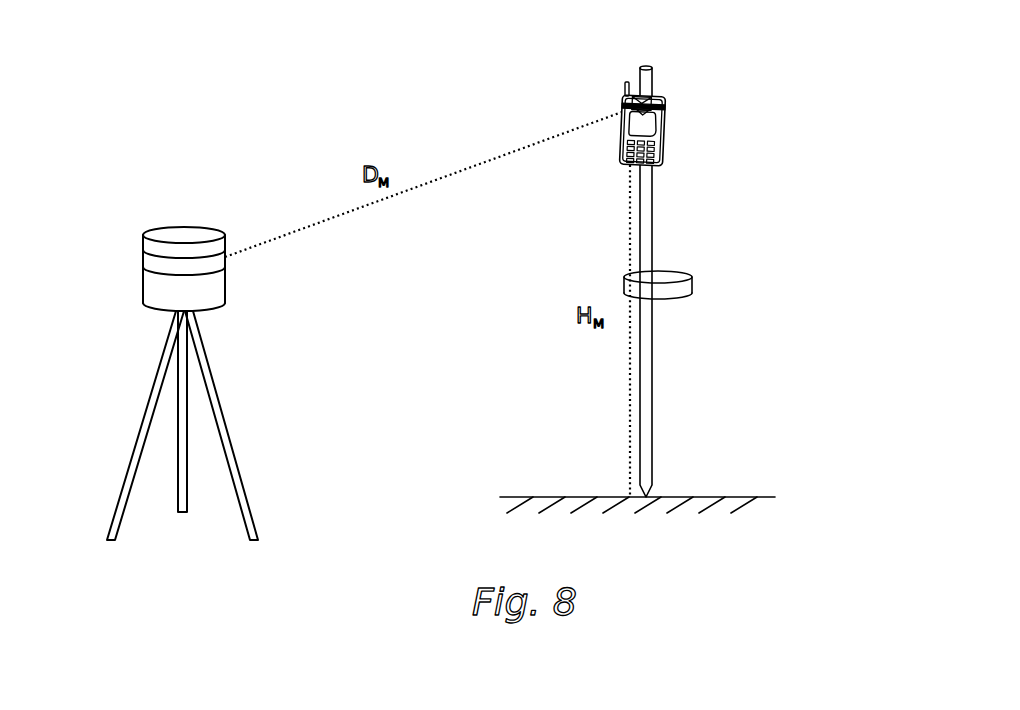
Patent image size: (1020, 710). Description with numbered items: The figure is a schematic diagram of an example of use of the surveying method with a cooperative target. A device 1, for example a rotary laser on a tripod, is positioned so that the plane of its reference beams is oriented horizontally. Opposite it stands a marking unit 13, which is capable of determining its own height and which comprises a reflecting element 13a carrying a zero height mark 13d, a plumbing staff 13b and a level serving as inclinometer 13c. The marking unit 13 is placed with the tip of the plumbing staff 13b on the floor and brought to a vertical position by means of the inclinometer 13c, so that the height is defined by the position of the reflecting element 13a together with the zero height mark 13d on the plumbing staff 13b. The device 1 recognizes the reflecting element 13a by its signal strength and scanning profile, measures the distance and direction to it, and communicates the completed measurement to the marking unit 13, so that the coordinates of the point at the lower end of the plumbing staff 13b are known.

The device 1 is at (129, 203).
The marking unit 13 is at (672, 129).
The reflecting element 13a is at (569, 80).
The plumbing staff 13b is at (705, 281).
The inclinometer 13c is at (710, 270).
The zero height mark 13d is at (700, 75).